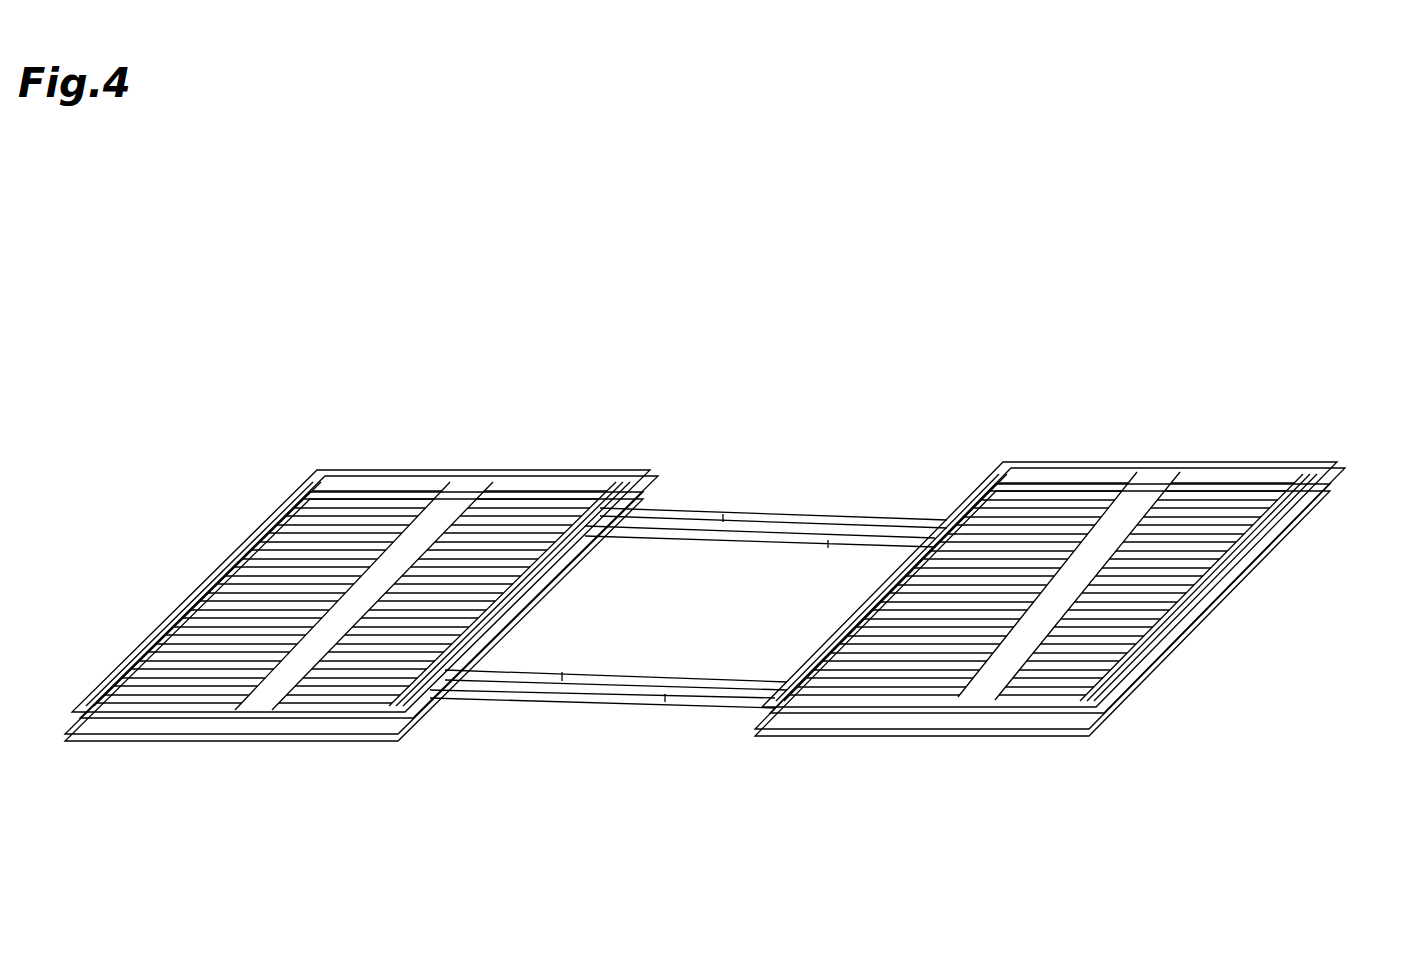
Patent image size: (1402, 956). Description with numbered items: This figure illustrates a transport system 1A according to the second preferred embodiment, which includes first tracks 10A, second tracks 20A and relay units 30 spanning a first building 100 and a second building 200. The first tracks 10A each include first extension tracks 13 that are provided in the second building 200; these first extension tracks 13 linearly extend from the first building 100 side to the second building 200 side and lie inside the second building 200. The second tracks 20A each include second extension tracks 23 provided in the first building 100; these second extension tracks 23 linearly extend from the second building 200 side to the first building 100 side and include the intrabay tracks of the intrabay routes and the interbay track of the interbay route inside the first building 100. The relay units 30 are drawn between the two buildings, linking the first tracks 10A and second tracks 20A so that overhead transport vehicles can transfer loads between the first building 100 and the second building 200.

The transport system 1A is at (1283, 322).
The first building 100 is at (258, 486).
The second building 200 is at (1318, 442).
The first tracks 10A is at (193, 746).
The second tracks 20A is at (403, 463).
The first extension tracks 13 is at (855, 550).
The second extension tracks 23 is at (172, 605).
The relay units 30 is at (767, 505).